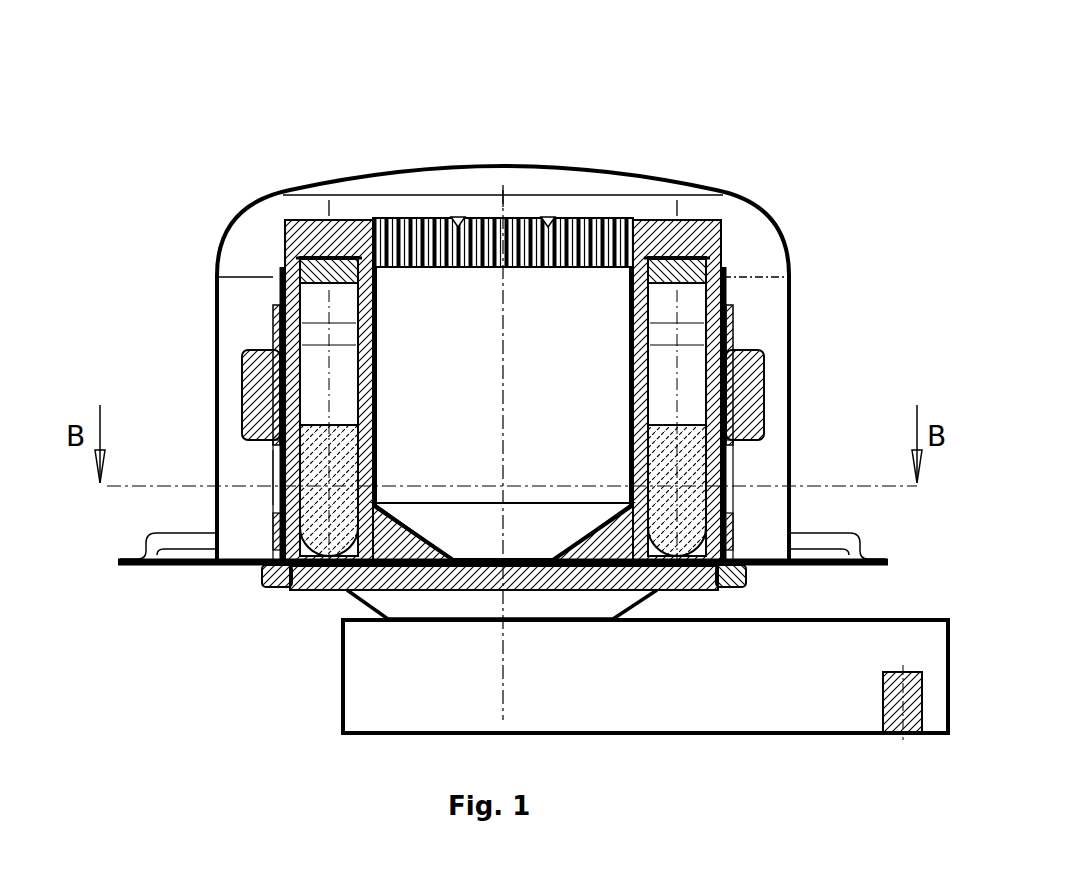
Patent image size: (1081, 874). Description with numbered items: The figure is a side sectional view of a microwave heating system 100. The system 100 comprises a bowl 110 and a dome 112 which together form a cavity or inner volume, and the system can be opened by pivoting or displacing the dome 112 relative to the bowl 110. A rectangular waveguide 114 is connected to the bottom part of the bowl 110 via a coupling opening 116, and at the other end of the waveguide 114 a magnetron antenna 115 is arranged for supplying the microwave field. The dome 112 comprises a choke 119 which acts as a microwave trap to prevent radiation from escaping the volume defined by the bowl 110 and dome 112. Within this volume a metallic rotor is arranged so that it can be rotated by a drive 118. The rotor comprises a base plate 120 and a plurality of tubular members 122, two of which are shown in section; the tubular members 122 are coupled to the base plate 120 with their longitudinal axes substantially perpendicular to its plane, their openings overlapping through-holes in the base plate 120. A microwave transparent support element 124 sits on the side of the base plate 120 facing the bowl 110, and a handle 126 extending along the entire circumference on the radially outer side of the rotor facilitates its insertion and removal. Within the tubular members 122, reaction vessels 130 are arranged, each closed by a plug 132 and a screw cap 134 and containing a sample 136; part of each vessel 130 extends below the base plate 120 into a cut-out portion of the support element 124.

The microwave heating system 100 is at (778, 117).
The bowl 110 is at (264, 583).
The dome 112 is at (790, 366).
The rectangular waveguide 114 is at (733, 735).
The magnetron antenna 115 is at (905, 705).
The coupling opening 116 is at (505, 622).
The drive 118 is at (746, 588).
The choke 119 is at (860, 535).
The base plate 120 is at (412, 530).
The tubular members 122 is at (725, 293).
The microwave transparent support element 124 is at (352, 592).
The handle 126 is at (242, 373).
The reaction vessels 130 is at (273, 480).
The plugs 132 is at (300, 273).
The screw caps 134 is at (293, 220).
The sample 136 is at (693, 470).